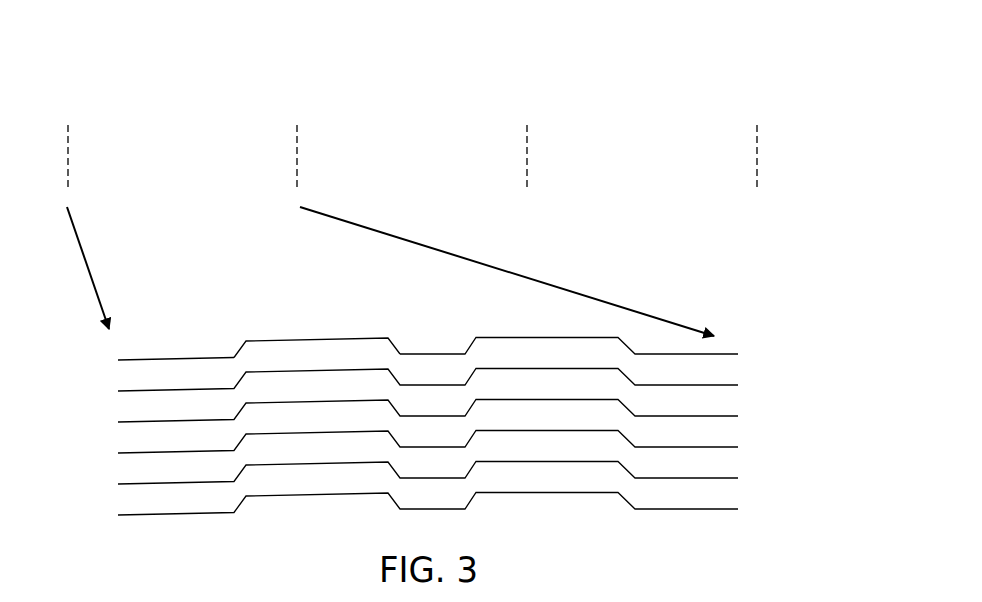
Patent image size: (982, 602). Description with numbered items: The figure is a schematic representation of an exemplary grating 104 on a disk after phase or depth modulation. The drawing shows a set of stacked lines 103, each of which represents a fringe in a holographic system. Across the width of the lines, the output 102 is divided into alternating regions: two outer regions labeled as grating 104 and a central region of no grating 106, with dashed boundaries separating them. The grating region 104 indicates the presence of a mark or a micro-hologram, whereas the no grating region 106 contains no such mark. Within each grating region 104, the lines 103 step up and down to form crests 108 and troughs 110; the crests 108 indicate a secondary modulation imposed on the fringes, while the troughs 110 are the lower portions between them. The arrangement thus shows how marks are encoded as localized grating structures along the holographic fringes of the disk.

The output 102 is at (733, 40).
The lines 103 is at (728, 354).
The grating 104 is at (103, 118).
The no grating region 106 is at (333, 118).
The crests 108 is at (318, 341).
The troughs 110 is at (177, 357).